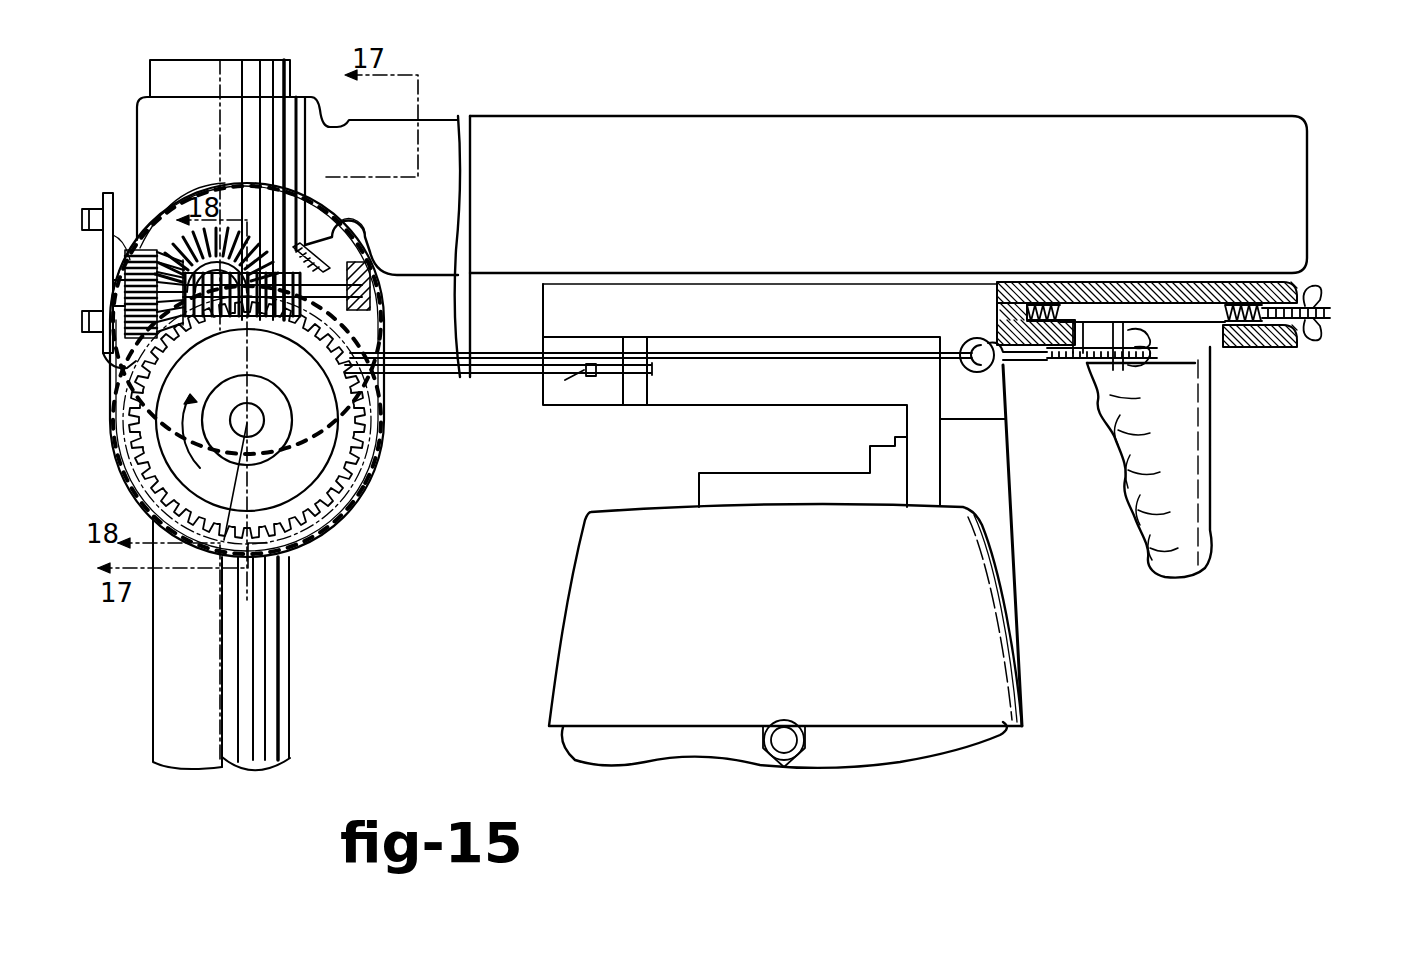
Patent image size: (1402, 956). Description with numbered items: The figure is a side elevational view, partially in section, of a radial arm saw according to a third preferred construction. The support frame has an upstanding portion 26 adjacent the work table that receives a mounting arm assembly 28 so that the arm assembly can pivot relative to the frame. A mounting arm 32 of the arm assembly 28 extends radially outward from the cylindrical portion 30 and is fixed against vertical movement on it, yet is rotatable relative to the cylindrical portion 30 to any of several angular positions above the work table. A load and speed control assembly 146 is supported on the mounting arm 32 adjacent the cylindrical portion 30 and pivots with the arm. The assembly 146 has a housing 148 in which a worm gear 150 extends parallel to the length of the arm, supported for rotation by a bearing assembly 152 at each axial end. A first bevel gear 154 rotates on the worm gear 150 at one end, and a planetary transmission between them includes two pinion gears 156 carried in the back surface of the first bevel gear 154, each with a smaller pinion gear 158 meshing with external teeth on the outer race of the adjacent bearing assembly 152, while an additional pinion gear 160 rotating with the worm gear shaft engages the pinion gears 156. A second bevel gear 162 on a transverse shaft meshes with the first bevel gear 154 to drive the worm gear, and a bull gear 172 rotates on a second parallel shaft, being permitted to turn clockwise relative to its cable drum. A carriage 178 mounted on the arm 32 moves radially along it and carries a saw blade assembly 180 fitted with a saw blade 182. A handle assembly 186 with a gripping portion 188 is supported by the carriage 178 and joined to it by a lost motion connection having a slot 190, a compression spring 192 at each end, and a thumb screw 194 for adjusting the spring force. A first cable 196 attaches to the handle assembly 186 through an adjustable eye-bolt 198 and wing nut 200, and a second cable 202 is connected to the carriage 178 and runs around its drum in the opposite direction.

The upstanding portion 26 is at (273, 707).
The mounting arm assembly 28 is at (322, 104).
The cylindrical portion 30 is at (140, 108).
The mounting arm 32 is at (505, 128).
The load and speed control assembly 146 is at (210, 181).
The housing 148 is at (172, 198).
The worm gear 150 is at (330, 227).
The bearing assembly 152 is at (368, 263).
The first bevel gear 154 is at (133, 250).
The pinion gears 156 is at (122, 235).
The smaller pinion gear 158 is at (107, 250).
The additional pinion gear 160 is at (110, 295).
The second bevel gear 162 is at (306, 268).
The bull gear 172 is at (330, 425).
The carriage 178 is at (607, 406).
The saw blade assembly 180 is at (752, 471).
The saw blade 182 is at (940, 775).
The handle assembly 186 is at (1207, 442).
The gripping portion 188 is at (1177, 497).
The slot 190 is at (1277, 347).
The compression spring 192 is at (1050, 310).
The thumb screw 194 is at (1310, 333).
The first cable 196 is at (842, 358).
The adjustable eye-bolt 198 is at (972, 370).
The wing nut 200 is at (1160, 372).
The second cable 202 is at (428, 372).